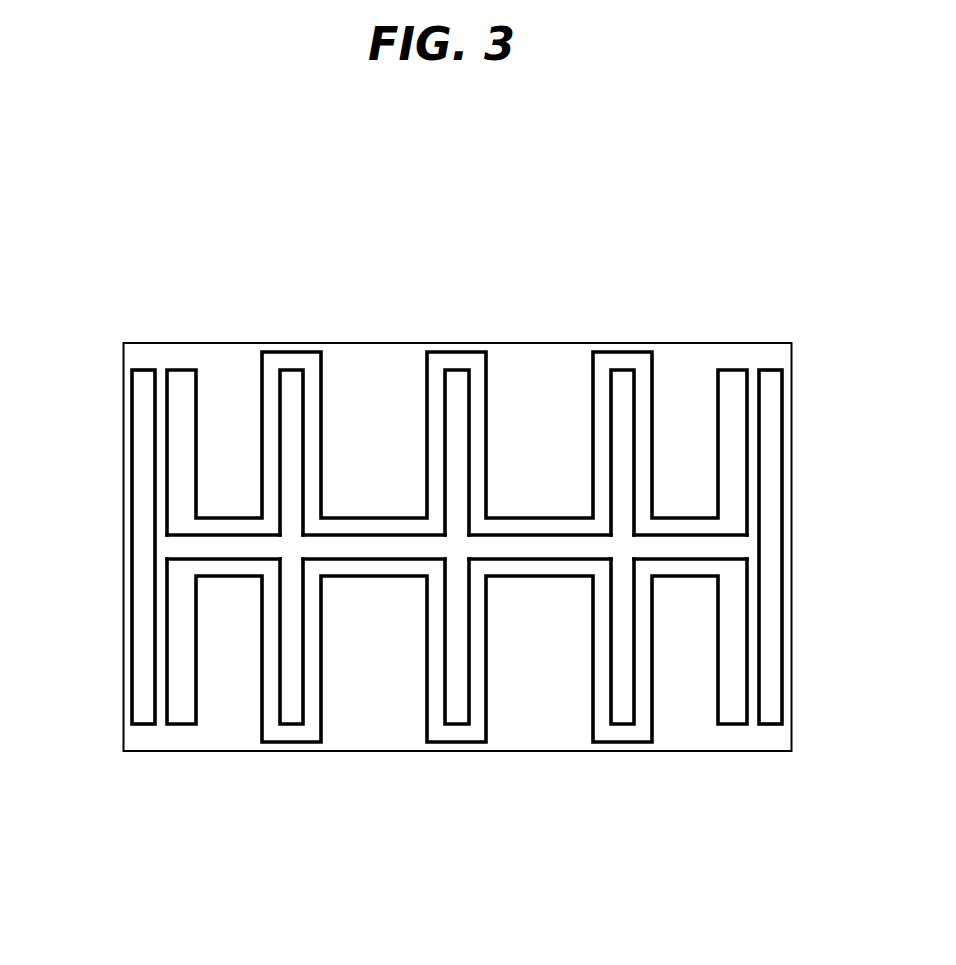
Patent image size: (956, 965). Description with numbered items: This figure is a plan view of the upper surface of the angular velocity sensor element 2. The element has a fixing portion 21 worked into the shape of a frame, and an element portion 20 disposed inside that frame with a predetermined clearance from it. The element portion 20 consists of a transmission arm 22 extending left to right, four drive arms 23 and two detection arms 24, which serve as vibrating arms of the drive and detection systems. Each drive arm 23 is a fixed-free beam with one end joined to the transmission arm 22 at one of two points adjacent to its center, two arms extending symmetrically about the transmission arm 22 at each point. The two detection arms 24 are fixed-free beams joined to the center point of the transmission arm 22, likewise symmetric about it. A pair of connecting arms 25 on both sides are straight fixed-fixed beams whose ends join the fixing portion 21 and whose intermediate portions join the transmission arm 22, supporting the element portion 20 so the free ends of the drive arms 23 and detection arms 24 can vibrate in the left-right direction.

The angular velocity sensor element 2 is at (694, 240).
The element portion 20 is at (747, 873).
The fixing portion 21 is at (743, 357).
The transmission arm 22 is at (193, 548).
The drive arm 23 is at (290, 382).
The detection arm 24 is at (454, 380).
The connecting arm 25 is at (163, 547).